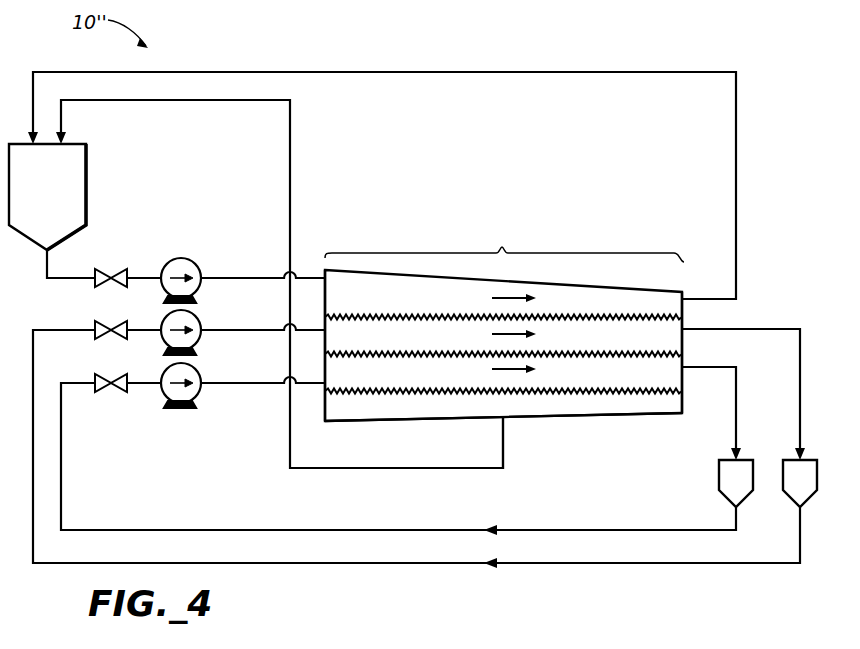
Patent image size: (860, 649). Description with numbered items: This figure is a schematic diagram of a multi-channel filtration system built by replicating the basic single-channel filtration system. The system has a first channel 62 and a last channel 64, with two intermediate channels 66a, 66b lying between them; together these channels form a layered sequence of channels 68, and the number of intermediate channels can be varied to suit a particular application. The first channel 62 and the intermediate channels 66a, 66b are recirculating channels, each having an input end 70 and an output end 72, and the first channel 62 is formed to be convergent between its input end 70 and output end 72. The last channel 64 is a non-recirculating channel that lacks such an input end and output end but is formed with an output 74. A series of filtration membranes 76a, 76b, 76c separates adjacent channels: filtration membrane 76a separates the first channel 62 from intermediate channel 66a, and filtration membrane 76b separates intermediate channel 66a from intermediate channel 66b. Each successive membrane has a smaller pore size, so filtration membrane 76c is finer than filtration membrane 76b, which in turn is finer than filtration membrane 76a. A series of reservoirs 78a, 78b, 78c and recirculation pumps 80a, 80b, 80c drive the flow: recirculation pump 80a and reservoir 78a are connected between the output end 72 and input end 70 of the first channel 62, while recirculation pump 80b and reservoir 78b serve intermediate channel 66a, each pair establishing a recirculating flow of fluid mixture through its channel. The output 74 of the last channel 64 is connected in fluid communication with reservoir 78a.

The first channel 62 is at (449, 290).
The last channel 64 is at (612, 405).
The intermediate channel 66a is at (567, 330).
The intermediate channel 66b is at (628, 363).
The layered sequence of channels 68 is at (504, 242).
The input end 70 is at (320, 268).
The output end 72 is at (683, 402).
The output 74 is at (503, 437).
The filtration membrane 76a is at (338, 318).
The filtration membrane 76b is at (380, 355).
The filtration membrane 76c is at (437, 392).
The reservoir 78a is at (88, 193).
The reservoir 78b is at (793, 500).
The reservoir 78c is at (718, 477).
The recirculation pump 80a is at (199, 266).
The recirculation pump 80b is at (199, 318).
The recirculation pump 80c is at (199, 371).